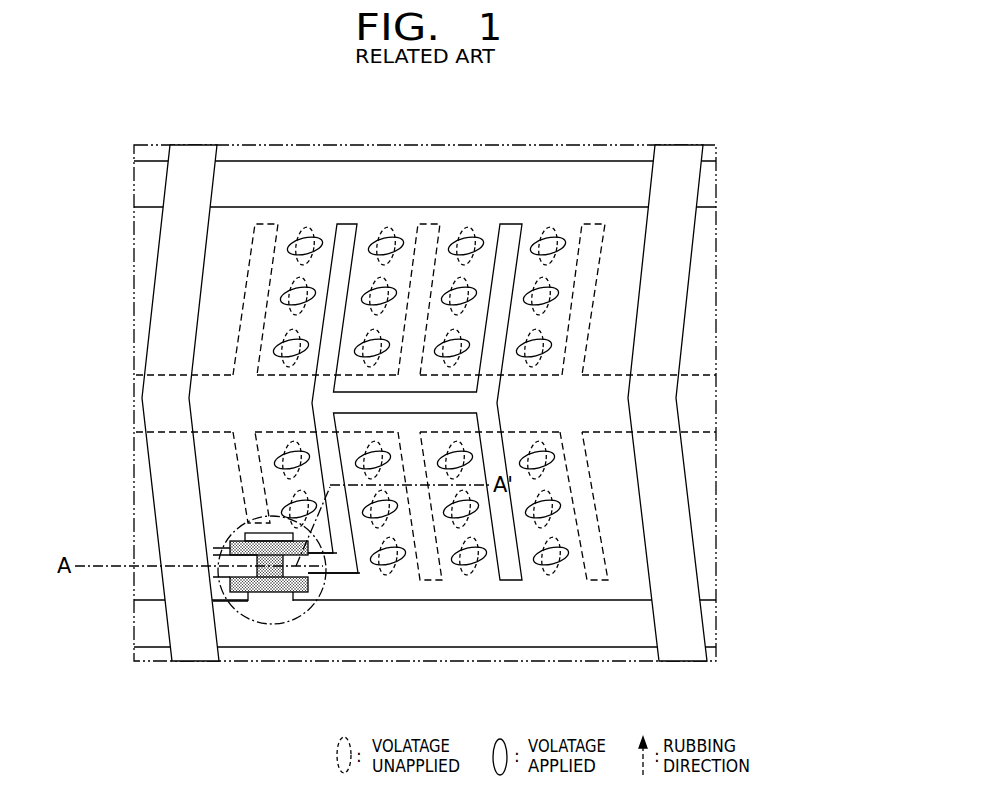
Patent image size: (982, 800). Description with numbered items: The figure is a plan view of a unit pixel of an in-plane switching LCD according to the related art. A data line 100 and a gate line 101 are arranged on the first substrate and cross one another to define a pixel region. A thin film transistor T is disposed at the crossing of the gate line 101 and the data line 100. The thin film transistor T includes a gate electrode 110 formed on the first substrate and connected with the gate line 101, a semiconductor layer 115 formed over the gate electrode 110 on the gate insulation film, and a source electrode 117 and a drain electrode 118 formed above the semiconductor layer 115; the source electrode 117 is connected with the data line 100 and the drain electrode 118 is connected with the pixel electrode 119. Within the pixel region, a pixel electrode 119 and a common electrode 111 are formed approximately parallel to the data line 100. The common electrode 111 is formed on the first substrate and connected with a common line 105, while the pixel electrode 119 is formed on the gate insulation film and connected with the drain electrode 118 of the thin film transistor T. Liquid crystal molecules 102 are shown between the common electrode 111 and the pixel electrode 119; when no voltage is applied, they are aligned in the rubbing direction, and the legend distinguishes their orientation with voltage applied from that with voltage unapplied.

The data line 100 is at (172, 305).
The gate line 101 is at (455, 638).
The liquid crystal molecules 102 is at (548, 232).
The common line 105 is at (223, 408).
The gate electrode 110 is at (272, 598).
The common electrode 111 is at (429, 232).
The semiconductor layer 115 is at (250, 603).
The source electrode 117 is at (228, 542).
The drain electrode 118 is at (310, 600).
The pixel electrode 119 is at (348, 233).
The thin film transistor T is at (235, 520).